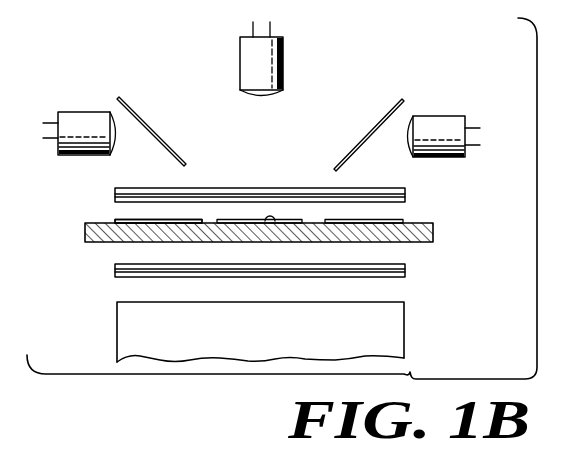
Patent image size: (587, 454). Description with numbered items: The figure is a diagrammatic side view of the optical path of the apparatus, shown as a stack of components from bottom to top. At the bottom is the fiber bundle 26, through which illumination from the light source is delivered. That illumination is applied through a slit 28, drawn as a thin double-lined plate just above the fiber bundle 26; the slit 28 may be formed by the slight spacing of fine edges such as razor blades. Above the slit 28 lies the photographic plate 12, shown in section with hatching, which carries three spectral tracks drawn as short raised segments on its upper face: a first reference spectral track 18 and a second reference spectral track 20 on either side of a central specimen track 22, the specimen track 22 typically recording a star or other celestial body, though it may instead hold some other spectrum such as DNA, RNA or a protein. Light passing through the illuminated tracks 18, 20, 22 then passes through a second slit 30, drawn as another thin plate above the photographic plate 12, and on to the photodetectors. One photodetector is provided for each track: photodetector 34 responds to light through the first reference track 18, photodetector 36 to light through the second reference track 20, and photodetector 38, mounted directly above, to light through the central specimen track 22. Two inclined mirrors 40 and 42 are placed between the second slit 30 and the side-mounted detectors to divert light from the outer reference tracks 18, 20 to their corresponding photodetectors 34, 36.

The photographic plate 12 is at (436, 232).
The first reference spectral track 18 is at (128, 219).
The second reference spectral track 20 is at (395, 220).
The central specimen track 22 is at (270, 221).
The fiber bundle 26 is at (405, 325).
The slit 28 is at (405, 270).
The second slit 30 is at (405, 195).
The photodetector 34 is at (80, 113).
The photodetector 36 is at (437, 116).
The photodetector 38 is at (283, 38).
The mirror 40 is at (143, 118).
The mirror 42 is at (378, 126).